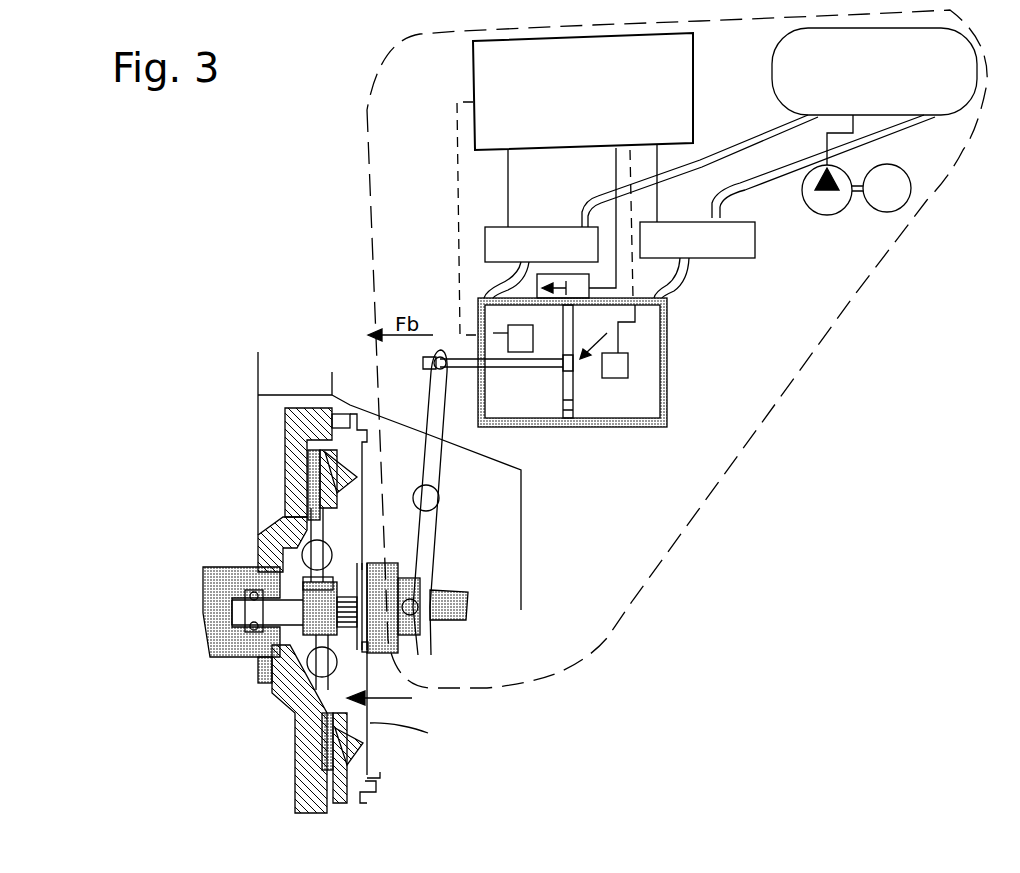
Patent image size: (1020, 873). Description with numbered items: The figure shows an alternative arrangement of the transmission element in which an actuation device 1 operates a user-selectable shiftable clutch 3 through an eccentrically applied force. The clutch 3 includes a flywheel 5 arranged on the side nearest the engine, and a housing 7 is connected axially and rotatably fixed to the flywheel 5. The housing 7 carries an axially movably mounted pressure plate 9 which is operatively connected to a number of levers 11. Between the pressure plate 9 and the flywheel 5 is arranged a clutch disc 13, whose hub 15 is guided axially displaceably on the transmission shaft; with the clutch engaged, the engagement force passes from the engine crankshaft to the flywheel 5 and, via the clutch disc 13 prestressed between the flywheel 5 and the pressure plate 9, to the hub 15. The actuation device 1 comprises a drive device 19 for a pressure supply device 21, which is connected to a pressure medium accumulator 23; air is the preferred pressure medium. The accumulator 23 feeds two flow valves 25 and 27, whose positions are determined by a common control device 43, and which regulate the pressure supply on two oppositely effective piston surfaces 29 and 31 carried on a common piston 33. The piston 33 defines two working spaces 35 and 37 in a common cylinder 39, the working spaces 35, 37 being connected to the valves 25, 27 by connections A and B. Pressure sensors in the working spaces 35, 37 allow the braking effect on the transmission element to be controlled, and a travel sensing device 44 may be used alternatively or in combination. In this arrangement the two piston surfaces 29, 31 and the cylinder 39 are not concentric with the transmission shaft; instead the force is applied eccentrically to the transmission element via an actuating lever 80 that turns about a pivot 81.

The actuation device 1 is at (931, 195).
The user-selectable shiftable clutch 3 is at (283, 571).
The flywheel 5 is at (283, 414).
The housing 7 is at (352, 408).
The pressure plate 9 is at (290, 417).
The levers 11 is at (417, 655).
The clutch disc 13 is at (313, 520).
The hub 15 is at (300, 600).
The drive device 19 is at (905, 168).
The pressure supply device 21 is at (828, 214).
The pressure medium accumulator 23 is at (779, 127).
The flow valve 25 is at (541, 262).
The flow valve 27 is at (697, 260).
The piston surface 29 is at (563, 400).
The piston surface 31 is at (582, 355).
The piston 33 is at (573, 407).
The working space 35 is at (543, 408).
The working space 37 is at (640, 363).
The cylinder 39 is at (579, 396).
The control device 43 is at (575, 184).
The travel sensing device 44 is at (537, 285).
The actuating lever 80 is at (422, 535).
The pivot 81 is at (430, 501).